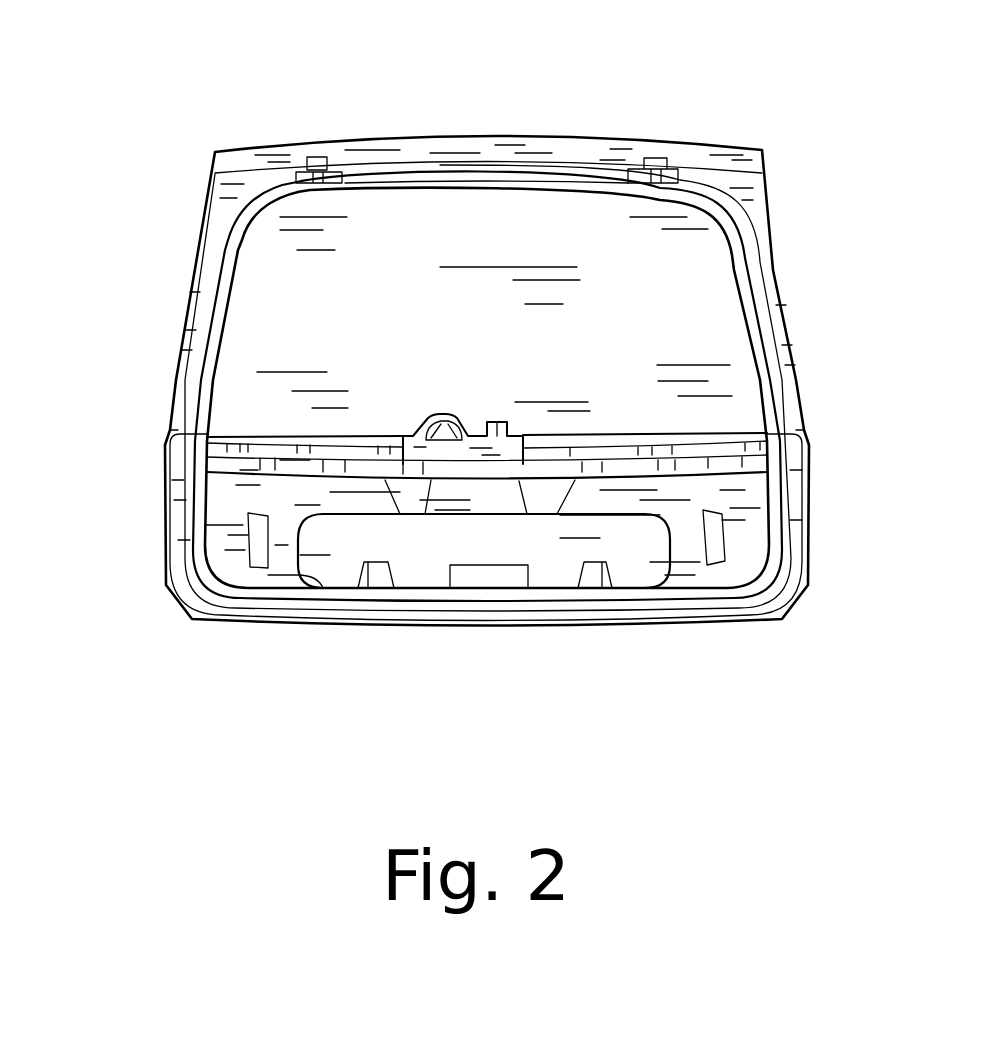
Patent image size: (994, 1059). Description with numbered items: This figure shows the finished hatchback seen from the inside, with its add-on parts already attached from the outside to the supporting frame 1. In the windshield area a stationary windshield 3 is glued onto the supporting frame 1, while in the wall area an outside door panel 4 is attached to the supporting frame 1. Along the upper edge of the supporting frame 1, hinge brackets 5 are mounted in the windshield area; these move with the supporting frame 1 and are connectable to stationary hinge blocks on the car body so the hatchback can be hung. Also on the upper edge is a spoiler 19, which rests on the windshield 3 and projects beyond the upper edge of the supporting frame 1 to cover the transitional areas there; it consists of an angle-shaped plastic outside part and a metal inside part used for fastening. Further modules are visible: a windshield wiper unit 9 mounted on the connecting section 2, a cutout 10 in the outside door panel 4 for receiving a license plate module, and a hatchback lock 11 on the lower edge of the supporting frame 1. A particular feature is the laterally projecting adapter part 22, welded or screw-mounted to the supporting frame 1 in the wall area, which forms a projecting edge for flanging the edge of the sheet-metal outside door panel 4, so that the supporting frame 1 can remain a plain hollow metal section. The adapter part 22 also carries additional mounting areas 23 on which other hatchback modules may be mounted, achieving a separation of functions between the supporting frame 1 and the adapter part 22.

The supporting frame 1 is at (752, 258).
The connecting section 2 is at (712, 463).
The windshield 3 is at (672, 308).
The outside door panel 4 is at (732, 497).
The hinge brackets 5 is at (323, 157).
The windshield wiper unit 9 is at (420, 432).
The cutout 10 is at (323, 588).
The hatchback lock 11 is at (486, 578).
The spoiler 19 is at (490, 157).
The adapter part 22 is at (700, 446).
The additional mounting areas 23 is at (204, 485).